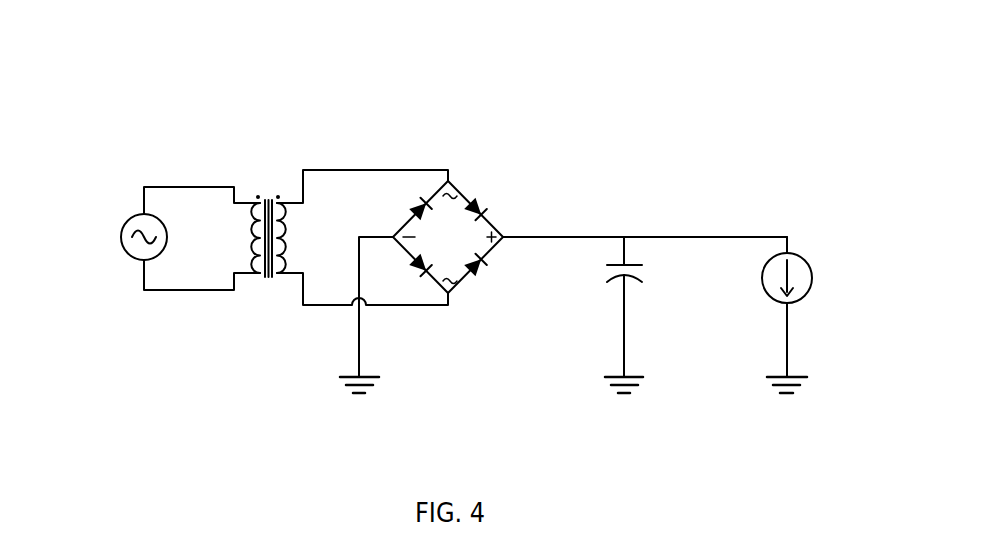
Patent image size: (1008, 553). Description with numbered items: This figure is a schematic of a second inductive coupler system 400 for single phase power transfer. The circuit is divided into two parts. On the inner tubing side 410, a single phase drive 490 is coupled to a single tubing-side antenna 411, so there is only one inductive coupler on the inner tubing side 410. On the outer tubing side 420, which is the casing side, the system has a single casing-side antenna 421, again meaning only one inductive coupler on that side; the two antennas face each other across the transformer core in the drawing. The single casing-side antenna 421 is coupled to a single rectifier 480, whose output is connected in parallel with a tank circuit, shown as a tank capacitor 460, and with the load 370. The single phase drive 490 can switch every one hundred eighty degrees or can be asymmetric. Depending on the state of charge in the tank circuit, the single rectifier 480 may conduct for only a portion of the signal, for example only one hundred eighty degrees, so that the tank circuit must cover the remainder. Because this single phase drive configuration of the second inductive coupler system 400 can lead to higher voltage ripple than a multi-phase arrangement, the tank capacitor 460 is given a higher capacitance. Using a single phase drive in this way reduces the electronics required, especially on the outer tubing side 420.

The second inductive coupler system 400 is at (147, 47).
The inner tubing side 410 is at (262, 162).
The outer tubing side 420 is at (855, 162).
The single phase drive 490 is at (118, 237).
The single tubing-side antenna 411 is at (235, 234).
The single casing-side antenna 421 is at (303, 234).
The single rectifier 480 is at (448, 237).
The tank capacitor 460 is at (646, 315).
The load 370 is at (813, 315).